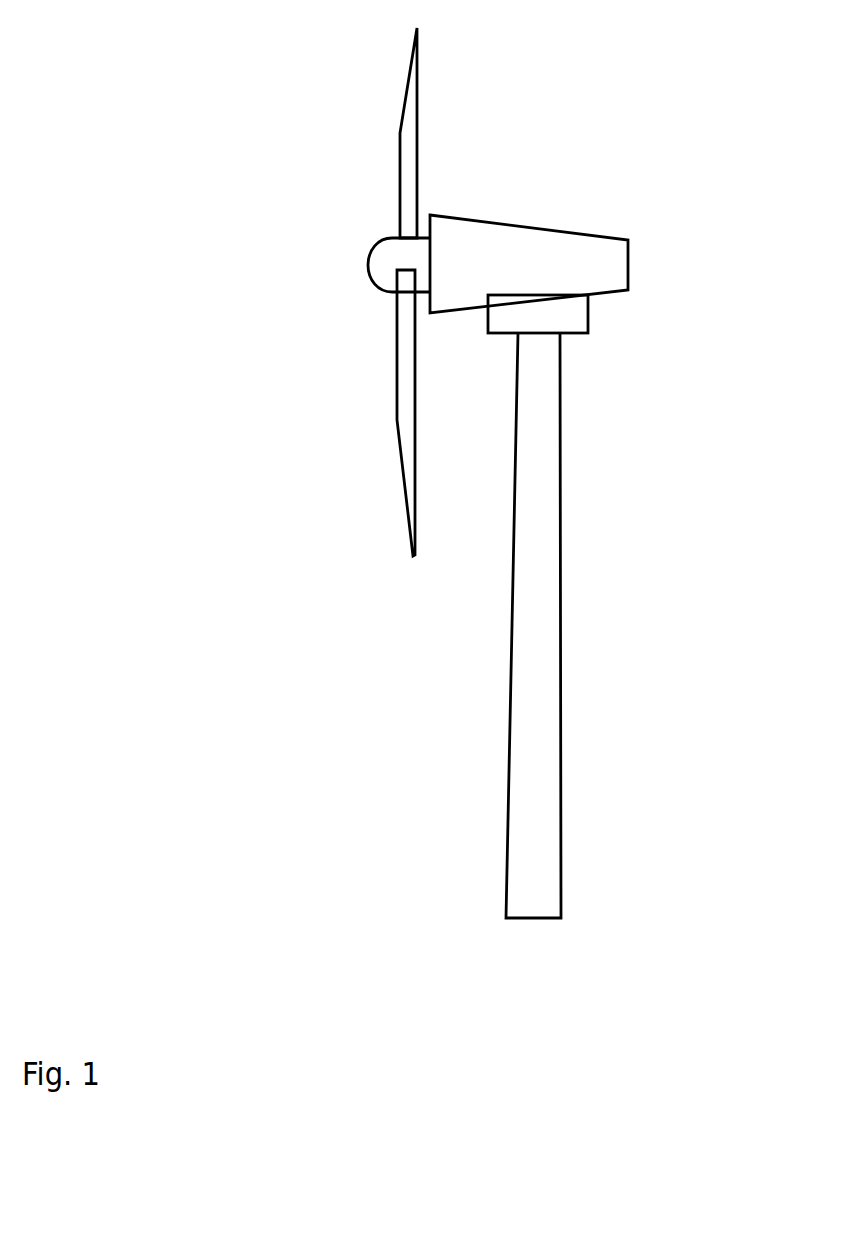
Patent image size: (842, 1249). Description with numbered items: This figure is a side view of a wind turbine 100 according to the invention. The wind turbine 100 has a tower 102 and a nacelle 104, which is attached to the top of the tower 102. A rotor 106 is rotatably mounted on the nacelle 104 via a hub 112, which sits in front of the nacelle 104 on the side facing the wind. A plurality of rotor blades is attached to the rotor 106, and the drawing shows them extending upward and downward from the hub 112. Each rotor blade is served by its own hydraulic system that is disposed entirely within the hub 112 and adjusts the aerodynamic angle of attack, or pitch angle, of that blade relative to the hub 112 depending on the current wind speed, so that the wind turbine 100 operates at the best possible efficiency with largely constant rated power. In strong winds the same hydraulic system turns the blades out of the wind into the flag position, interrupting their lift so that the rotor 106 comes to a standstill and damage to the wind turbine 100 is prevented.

The wind turbine 100 is at (260, 138).
The tower 102 is at (548, 513).
The nacelle 104 is at (527, 248).
The rotor 106 is at (350, 311).
The hub 112 is at (383, 262).